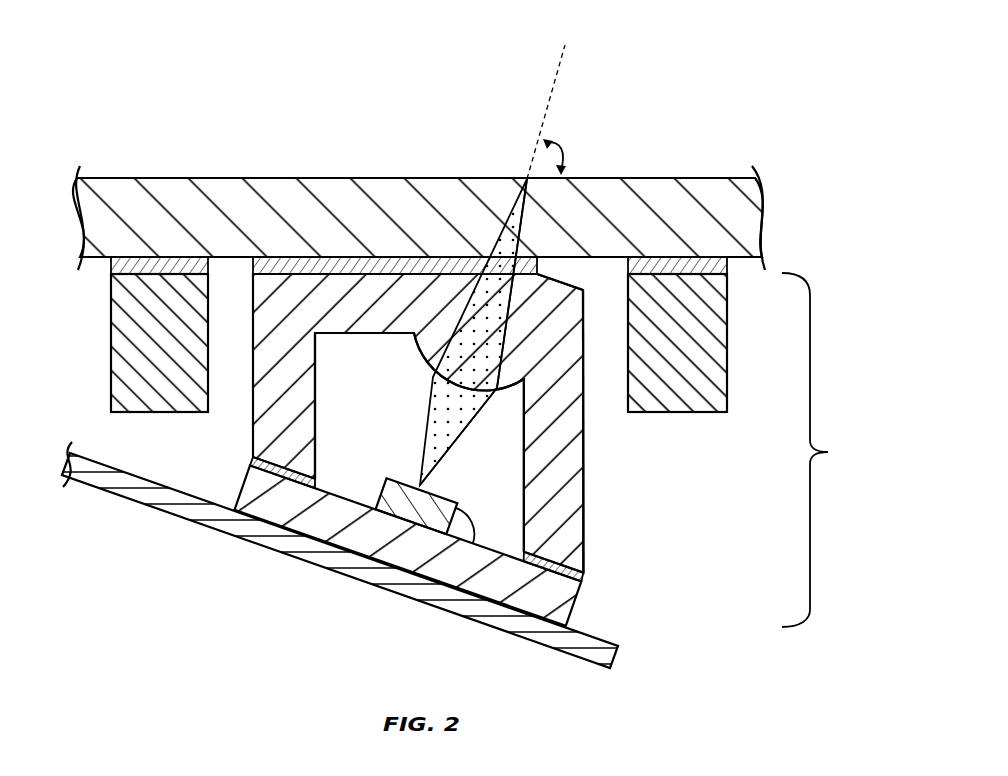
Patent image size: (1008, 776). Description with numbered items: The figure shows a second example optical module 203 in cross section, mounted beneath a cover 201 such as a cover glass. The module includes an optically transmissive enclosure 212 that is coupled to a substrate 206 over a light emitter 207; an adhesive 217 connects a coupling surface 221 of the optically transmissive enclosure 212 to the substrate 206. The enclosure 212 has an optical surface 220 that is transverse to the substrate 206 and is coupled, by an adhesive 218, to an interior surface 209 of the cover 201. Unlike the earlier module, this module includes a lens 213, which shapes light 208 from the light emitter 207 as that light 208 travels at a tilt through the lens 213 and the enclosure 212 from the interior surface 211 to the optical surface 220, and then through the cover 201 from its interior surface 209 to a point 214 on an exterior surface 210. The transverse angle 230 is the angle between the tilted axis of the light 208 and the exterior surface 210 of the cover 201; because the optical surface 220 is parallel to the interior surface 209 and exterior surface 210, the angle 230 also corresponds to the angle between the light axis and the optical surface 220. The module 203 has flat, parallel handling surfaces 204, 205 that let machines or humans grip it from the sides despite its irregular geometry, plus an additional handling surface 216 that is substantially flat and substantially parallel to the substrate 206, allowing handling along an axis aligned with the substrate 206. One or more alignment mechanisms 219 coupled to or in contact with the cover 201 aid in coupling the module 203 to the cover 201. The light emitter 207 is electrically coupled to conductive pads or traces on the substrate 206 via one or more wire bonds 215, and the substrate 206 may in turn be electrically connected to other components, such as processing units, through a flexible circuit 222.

The cover 201 is at (770, 216).
The optical module 203 is at (823, 450).
The handling surface 204 is at (586, 486).
The handling surface 205 is at (252, 418).
The substrate 206 is at (577, 609).
The light emitter 207 is at (383, 490).
The light 208 is at (452, 447).
The interior surface 209 is at (598, 268).
The exterior surface 210 is at (262, 177).
The interior surface 211 is at (357, 336).
The optically transmissive enclosure 212 is at (222, 340).
The lens 213 is at (431, 378).
The point 214 is at (527, 179).
The wire bond 215 is at (474, 513).
The handling surface 216 is at (560, 288).
The adhesive 217 is at (588, 577).
The adhesive 218 is at (240, 262).
The alignment mechanism 219 is at (729, 346).
The optical surface 220 is at (380, 268).
The coupling surface 221 is at (280, 470).
The flexible circuit 222 is at (616, 658).
The transverse angle 230 is at (567, 147).